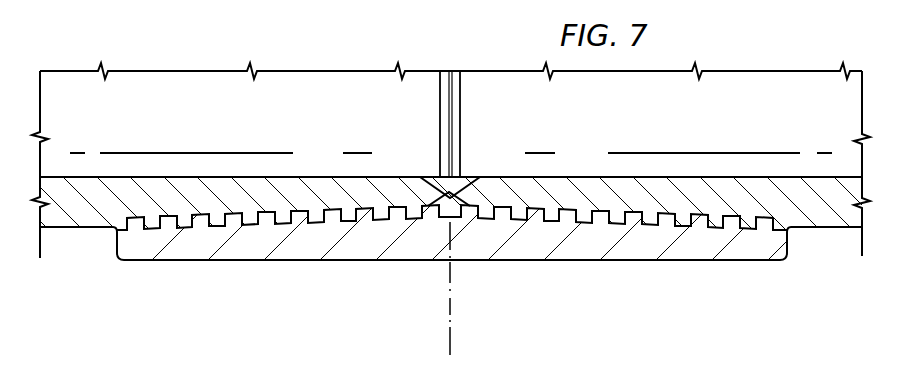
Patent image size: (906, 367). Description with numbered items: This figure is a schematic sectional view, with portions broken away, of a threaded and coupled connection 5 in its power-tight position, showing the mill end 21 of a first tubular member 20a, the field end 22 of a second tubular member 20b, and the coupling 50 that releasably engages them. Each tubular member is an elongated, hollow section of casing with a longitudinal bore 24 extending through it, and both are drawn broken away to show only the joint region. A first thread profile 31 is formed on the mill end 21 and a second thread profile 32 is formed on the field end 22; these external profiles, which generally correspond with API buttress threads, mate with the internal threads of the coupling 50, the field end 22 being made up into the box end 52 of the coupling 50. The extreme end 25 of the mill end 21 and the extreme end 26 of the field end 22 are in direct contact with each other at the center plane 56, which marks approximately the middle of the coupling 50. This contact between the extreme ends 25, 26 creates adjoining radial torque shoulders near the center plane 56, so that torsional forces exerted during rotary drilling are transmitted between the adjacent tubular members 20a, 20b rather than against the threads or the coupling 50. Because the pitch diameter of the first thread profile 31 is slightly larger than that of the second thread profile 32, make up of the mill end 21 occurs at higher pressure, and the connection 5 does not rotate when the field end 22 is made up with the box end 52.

The joint assembly 5 is at (563, 262).
The first tubular member 20a is at (88, 230).
The second tubular member 20b is at (818, 231).
The mill end 21 is at (326, 177).
The field end 22 is at (578, 177).
The longitudinal bore 24 is at (236, 134).
The extreme end 25 is at (470, 200).
The extreme end 26 is at (450, 197).
The first thread profile 31 is at (218, 227).
The second thread profile 32 is at (682, 228).
The coupling 50 is at (330, 264).
The second end 52 is at (790, 256).
The center plane 56 is at (455, 330).